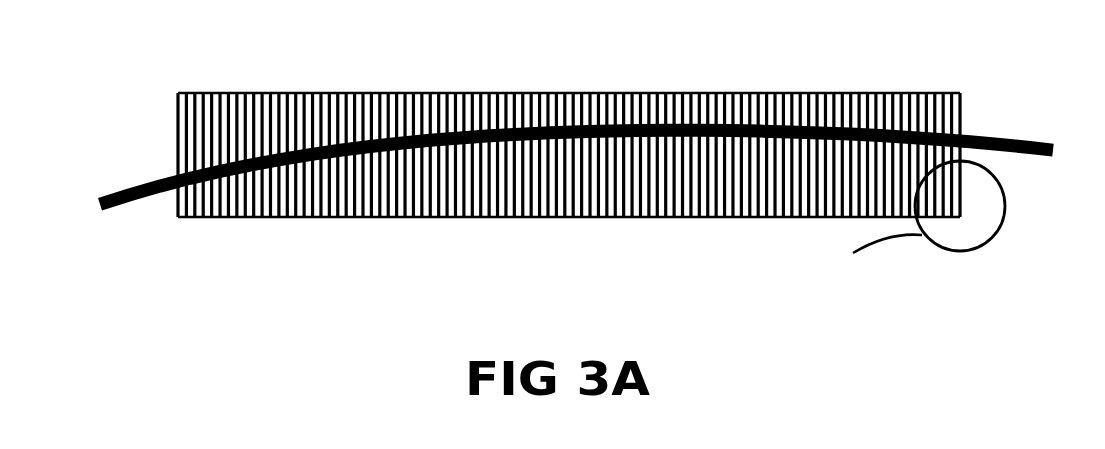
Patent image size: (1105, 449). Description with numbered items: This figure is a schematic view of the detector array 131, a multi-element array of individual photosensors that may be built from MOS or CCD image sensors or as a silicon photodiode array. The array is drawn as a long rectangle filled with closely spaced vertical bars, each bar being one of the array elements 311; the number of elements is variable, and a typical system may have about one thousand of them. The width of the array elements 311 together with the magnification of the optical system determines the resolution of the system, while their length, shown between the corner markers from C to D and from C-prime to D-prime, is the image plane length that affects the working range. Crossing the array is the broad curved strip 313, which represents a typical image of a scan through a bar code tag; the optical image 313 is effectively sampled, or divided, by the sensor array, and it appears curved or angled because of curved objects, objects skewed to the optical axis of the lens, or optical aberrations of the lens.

The detector array 131 is at (912, 63).
The array elements 311 is at (390, 105).
The image 313 is at (150, 185).